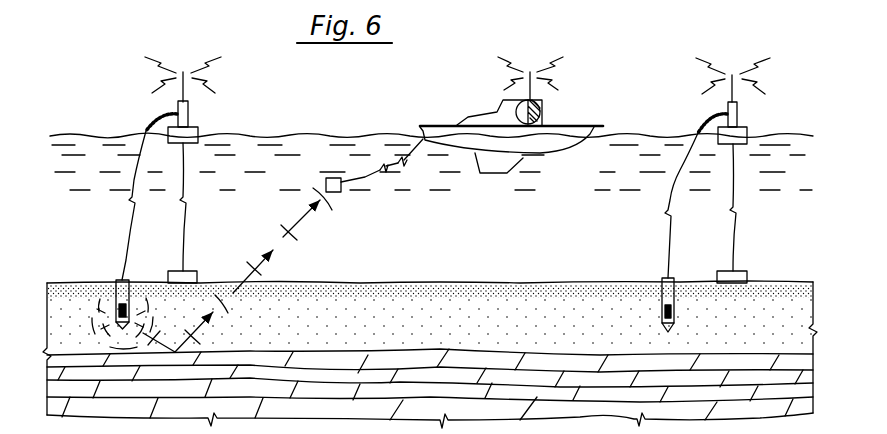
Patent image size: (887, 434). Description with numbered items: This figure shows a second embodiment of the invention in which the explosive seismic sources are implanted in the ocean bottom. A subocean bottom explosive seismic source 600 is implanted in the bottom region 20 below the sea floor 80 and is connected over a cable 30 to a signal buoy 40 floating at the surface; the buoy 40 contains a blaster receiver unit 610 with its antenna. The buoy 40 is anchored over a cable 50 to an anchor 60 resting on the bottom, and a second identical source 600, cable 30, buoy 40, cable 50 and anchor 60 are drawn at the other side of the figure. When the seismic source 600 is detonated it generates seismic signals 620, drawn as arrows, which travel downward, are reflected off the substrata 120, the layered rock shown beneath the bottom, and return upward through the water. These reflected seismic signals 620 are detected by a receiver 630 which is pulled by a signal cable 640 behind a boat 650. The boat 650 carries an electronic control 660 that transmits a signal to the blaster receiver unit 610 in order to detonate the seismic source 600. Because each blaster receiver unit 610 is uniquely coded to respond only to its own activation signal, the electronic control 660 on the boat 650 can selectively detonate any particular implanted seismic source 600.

The sea floor sediment layer 20 is at (343, 328).
The cable 30 is at (126, 227).
The signal buoy 40 is at (198, 127).
The cable 50 is at (755, 229).
The anchor 60 is at (190, 271).
The sea floor 80 is at (377, 283).
The substrata 120 is at (285, 395).
The subocean bottom explosive seismic source 600 is at (114, 283).
The blaster receiver unit 610 is at (188, 115).
The seismic signals 620 is at (297, 238).
The receiver 630 is at (335, 192).
The signal cable 640 is at (384, 164).
The boat 650 is at (514, 115).
The electronic control 660 is at (518, 110).